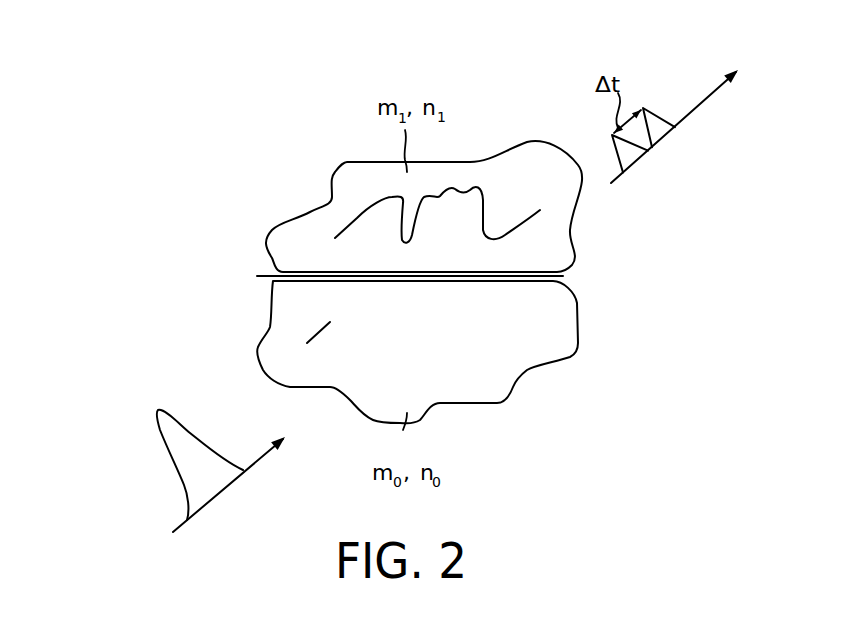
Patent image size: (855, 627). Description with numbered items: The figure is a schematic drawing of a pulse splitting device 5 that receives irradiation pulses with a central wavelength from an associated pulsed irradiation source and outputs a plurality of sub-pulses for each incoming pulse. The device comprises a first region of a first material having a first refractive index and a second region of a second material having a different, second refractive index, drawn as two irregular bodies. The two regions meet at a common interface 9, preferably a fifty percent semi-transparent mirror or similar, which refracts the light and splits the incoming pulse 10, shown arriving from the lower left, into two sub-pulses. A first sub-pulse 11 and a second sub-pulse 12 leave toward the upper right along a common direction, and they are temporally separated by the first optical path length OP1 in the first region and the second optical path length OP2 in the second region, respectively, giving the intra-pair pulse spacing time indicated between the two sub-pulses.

The pulse splitting device 5 is at (96, 70).
The common interface 9 is at (570, 276).
The pulse 10 is at (172, 458).
The first sub-pulse 11 is at (613, 150).
The second sub-pulse 12 is at (650, 110).
The first optical path length OP1 is at (520, 300).
The second optical path length OP2 is at (347, 228).